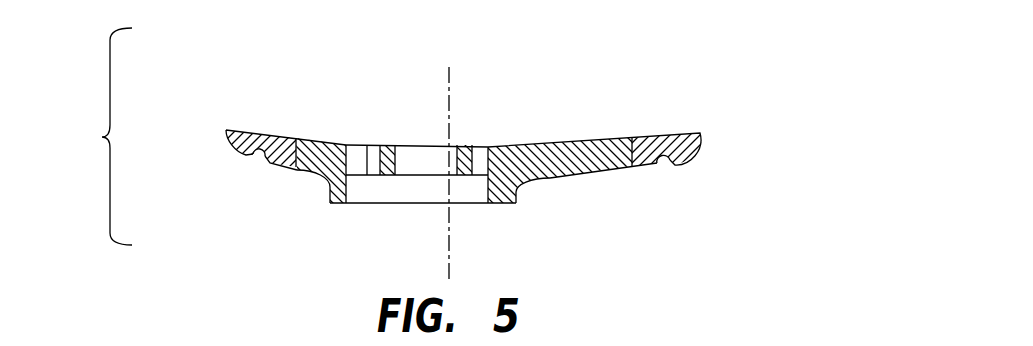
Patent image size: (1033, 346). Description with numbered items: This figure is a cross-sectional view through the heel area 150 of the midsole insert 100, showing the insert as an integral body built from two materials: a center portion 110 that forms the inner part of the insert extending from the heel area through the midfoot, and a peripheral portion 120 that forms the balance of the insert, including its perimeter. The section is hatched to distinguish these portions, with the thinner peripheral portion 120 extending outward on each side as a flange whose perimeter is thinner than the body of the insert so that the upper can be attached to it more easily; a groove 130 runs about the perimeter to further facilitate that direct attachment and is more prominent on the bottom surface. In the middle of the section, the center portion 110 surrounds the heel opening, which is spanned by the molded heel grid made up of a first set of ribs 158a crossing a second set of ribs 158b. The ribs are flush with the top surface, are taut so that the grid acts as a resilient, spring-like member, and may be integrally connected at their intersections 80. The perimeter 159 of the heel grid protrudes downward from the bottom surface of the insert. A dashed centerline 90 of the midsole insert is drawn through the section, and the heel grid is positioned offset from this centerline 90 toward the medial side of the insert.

The midsole insert 100 is at (632, 78).
The heel area 150 is at (102, 137).
The peripheral portion 120 is at (257, 131).
The groove 130 is at (260, 157).
The perimeter of the heel grid 159 is at (330, 205).
The center portion 110 is at (547, 177).
The first set of ribs 158a is at (387, 145).
The second set of ribs 158b is at (427, 168).
The intersections 80 is at (458, 145).
The centerline 90 is at (449, 80).